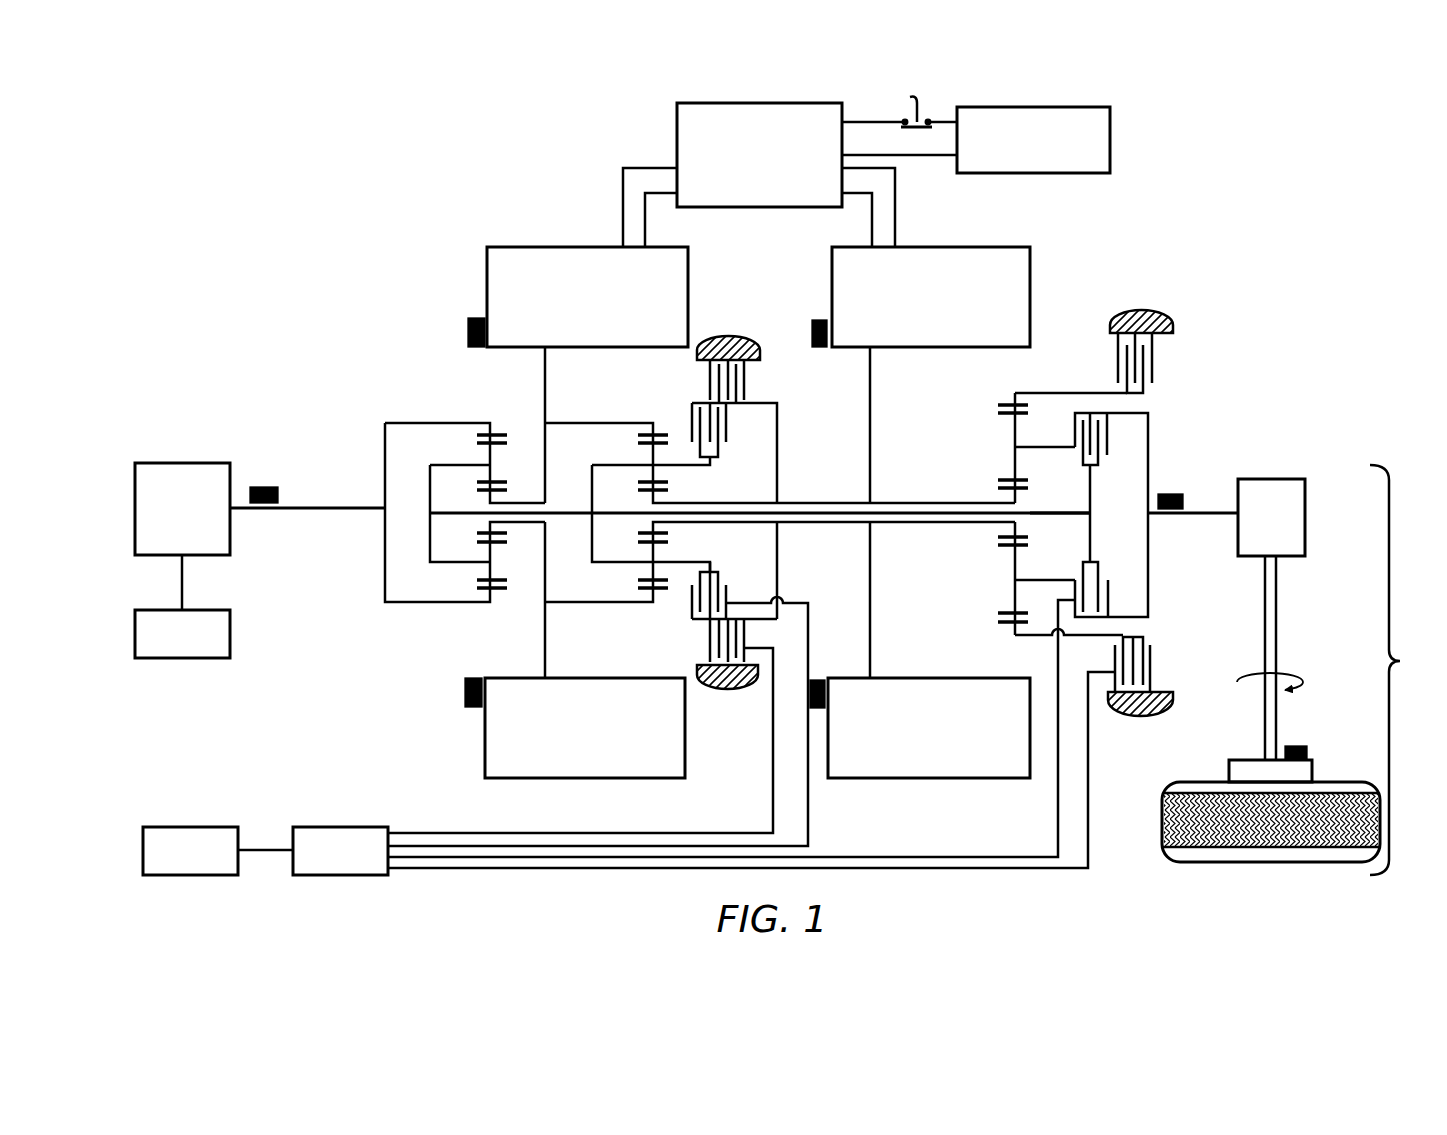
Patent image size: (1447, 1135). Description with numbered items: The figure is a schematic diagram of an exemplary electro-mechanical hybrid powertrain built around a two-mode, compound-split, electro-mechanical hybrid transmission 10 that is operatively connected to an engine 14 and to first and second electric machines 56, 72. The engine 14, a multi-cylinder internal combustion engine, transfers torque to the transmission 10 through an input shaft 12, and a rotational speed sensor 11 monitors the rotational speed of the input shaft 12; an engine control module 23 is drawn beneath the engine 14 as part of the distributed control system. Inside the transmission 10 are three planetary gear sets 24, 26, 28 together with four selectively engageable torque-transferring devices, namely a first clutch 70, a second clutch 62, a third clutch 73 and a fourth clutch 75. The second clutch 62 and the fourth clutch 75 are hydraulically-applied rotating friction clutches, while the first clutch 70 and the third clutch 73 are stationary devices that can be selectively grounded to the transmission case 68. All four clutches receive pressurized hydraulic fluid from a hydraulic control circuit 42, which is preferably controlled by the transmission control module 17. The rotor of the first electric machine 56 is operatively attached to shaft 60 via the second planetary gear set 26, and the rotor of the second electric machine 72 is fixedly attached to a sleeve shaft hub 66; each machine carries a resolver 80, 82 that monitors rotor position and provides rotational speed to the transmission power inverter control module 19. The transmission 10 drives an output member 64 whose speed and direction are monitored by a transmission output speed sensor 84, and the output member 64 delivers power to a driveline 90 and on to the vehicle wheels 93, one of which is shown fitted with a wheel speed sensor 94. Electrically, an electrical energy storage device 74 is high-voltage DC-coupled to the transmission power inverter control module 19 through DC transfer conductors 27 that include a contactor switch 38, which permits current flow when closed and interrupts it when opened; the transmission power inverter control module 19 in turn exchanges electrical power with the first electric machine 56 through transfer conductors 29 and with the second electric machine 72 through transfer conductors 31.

The electro-mechanical hybrid transmission 10 is at (446, 207).
The rotational speed sensor 11 is at (265, 487).
The input shaft 12 is at (345, 508).
The engine 14 is at (190, 463).
The transmission control module 17 is at (180, 827).
The transmission power inverter control module 19 is at (677, 118).
The engine control module 23 is at (230, 653).
The first planetary gear set 24 is at (485, 420).
The second planetary gear set 26 is at (648, 420).
The DC transfer conductors 27 is at (856, 122).
The third planetary gear set 28 is at (1006, 392).
The transfer conductors 29 is at (623, 206).
The transfer conductors 31 is at (895, 208).
The contactor switch 38 is at (924, 101).
The hydraulic control circuit 42 is at (310, 827).
The first electric machine 56 is at (487, 280).
The shaft 60 is at (1068, 512).
The clutch C2 62 is at (1109, 455).
The output member 64 is at (1207, 512).
The sleeve shaft hub 66 is at (908, 503).
The transmission case 68 is at (725, 338).
The clutch C1 70 is at (1111, 349).
The second electric machine 72 is at (1030, 268).
The clutch C3 73 is at (756, 383).
The electrical energy storage device 74 is at (1110, 128).
The clutch C4 75 is at (727, 441).
The resolver 80 is at (468, 330).
The resolver 82 is at (820, 320).
The transmission output speed sensor 84 is at (1170, 494).
The driveline 90 is at (1295, 670).
The vehicle wheel 93 is at (1229, 766).
The wheel speed sensor 94 is at (1292, 746).